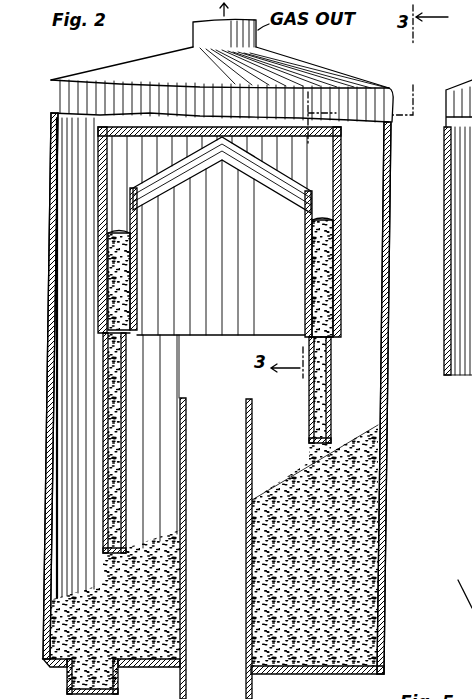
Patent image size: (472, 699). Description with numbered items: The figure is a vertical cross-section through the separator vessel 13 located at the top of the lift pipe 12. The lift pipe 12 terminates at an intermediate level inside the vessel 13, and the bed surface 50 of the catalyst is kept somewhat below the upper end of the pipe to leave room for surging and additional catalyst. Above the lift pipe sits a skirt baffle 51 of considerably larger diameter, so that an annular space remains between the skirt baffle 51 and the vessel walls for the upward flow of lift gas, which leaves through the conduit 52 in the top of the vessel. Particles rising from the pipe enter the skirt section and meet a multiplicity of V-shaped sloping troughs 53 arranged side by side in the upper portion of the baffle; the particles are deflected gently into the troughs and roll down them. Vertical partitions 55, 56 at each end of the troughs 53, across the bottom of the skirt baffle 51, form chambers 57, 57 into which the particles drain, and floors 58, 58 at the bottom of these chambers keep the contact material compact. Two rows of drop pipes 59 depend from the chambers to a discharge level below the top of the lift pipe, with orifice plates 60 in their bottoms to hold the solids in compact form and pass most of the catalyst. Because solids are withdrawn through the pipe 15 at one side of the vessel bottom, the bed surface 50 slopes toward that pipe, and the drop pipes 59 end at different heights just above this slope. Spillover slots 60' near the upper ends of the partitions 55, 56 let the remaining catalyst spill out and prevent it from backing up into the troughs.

The lift pipe 12 is at (253, 421).
The separator vessel 13 is at (386, 463).
The withdrawal pipe 15 is at (65, 684).
The bed surface 50 is at (261, 483).
The skirt baffle 51 is at (336, 289).
The gas conduit 52 is at (193, 31).
The V-shaped sloping troughs 53 is at (191, 183).
The vertical partition 55 is at (138, 282).
The vertical partition 56 is at (306, 286).
The chamber 57 is at (222, 278).
The floor 58 is at (99, 341).
The drop pipes 59 is at (127, 472).
The orifice plates 60 is at (214, 547).
The spillover slots 60' is at (220, 229).